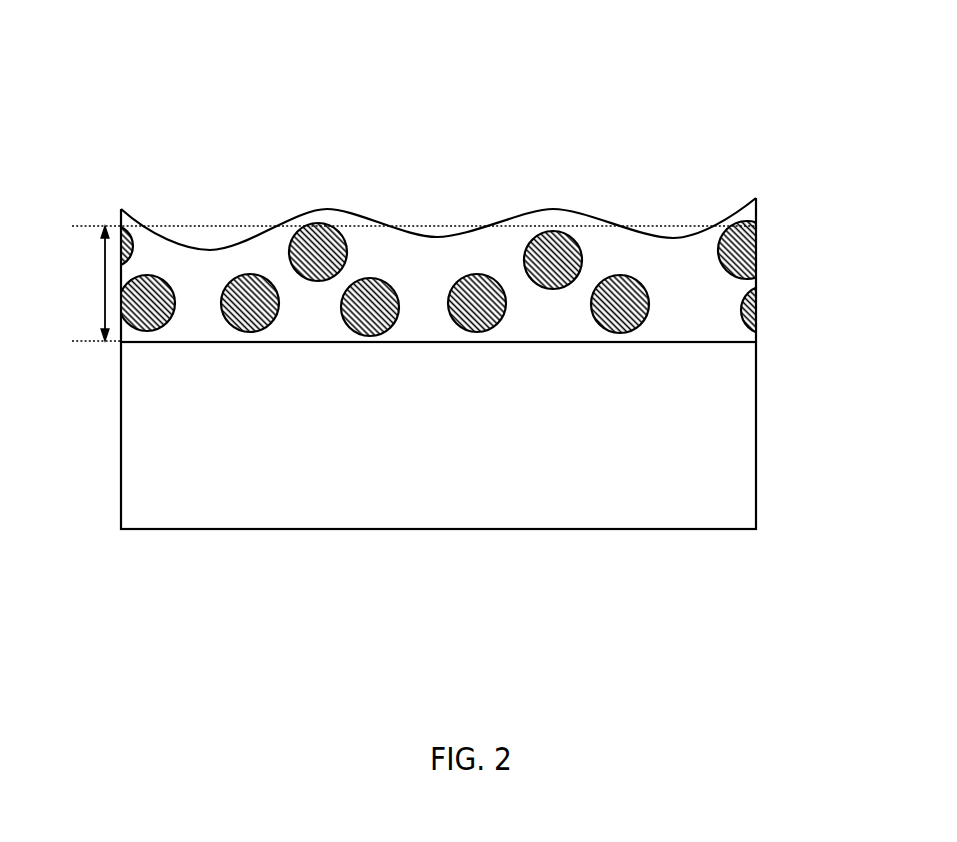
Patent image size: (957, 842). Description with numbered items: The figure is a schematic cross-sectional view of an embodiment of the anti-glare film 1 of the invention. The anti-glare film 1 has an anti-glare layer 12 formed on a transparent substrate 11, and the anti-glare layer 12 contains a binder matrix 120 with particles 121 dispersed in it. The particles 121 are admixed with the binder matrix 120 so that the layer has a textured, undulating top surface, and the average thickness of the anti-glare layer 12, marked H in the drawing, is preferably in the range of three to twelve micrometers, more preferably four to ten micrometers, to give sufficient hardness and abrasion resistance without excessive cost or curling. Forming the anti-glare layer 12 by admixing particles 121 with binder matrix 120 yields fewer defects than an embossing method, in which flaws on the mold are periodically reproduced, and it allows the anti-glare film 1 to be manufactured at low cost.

The anti-glare film 1 is at (545, 115).
The transparent substrate 11 is at (763, 345).
The anti-glare layer 12 is at (460, 210).
The binder matrix 120 is at (644, 253).
The particles 121 is at (322, 247).